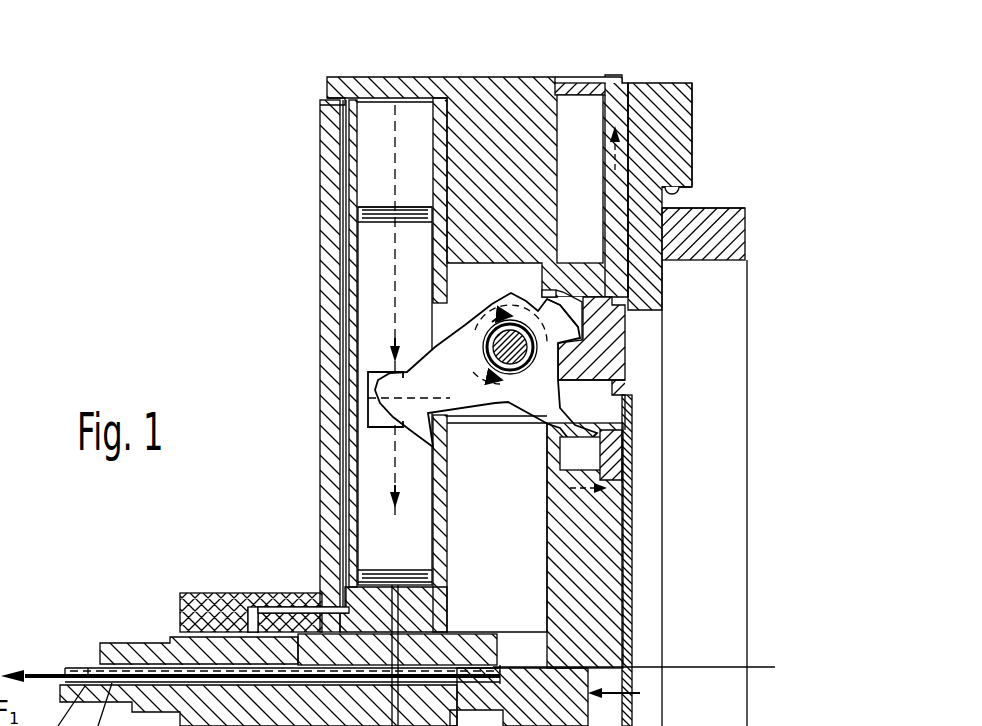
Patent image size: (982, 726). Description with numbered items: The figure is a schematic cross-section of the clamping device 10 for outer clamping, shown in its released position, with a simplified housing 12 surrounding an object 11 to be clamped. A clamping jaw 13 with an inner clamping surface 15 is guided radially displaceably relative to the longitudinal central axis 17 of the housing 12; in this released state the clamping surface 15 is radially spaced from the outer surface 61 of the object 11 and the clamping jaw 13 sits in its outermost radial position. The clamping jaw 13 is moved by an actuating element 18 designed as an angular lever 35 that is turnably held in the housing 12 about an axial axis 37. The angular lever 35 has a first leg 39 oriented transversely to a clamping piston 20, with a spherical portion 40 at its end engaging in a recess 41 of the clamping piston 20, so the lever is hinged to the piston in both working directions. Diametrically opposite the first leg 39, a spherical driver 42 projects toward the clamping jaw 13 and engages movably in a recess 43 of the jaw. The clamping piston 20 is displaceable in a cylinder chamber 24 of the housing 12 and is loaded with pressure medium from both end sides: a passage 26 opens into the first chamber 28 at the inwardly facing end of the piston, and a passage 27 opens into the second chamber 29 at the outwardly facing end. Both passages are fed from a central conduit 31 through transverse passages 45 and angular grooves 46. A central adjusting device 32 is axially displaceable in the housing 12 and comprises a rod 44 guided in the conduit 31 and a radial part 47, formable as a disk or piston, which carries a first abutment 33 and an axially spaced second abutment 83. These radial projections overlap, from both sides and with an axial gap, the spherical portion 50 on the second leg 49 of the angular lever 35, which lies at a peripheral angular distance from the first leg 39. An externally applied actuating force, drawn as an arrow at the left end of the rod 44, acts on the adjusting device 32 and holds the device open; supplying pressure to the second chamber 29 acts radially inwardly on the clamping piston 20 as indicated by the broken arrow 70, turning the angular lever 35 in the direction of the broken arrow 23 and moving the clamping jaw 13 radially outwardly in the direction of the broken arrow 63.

The clamping device 10 is at (742, 174).
The object 11 is at (727, 228).
The housing 12 is at (513, 108).
The clamping jaw 13 is at (645, 148).
The inner clamping surface 15 is at (672, 186).
The longitudinal central axis 17 is at (712, 667).
The actuating element 18 is at (445, 368).
The clamping piston 20 is at (377, 460).
The broken arrow 23 is at (470, 405).
The cylinder chamber 24 is at (330, 350).
The passage 26 is at (432, 597).
The passage 27 is at (345, 122).
The first chamber 28 is at (400, 608).
The second chamber 29 is at (380, 100).
The central conduit 31 is at (85, 672).
The adjusting device 32 is at (590, 693).
The abutment 33 is at (552, 446).
The angular lever 35 is at (385, 330).
The axial axis 37 is at (432, 328).
The first leg 39 is at (398, 318).
The spherical portion 40 is at (398, 418).
The recess 41 is at (395, 398).
The driver 42 is at (590, 318).
The recess 43 is at (587, 305).
The rod 44 is at (195, 643).
The transverse passage 45 is at (232, 632).
The angular groove 46 is at (180, 598).
The radial part 47 is at (603, 630).
The second leg 49 is at (598, 383).
The spherical portion 50 is at (624, 433).
The outer surface 61 is at (690, 208).
The broken arrow 63 is at (608, 160).
The broken arrow 70 is at (345, 490).
The second abutment 83 is at (632, 462).